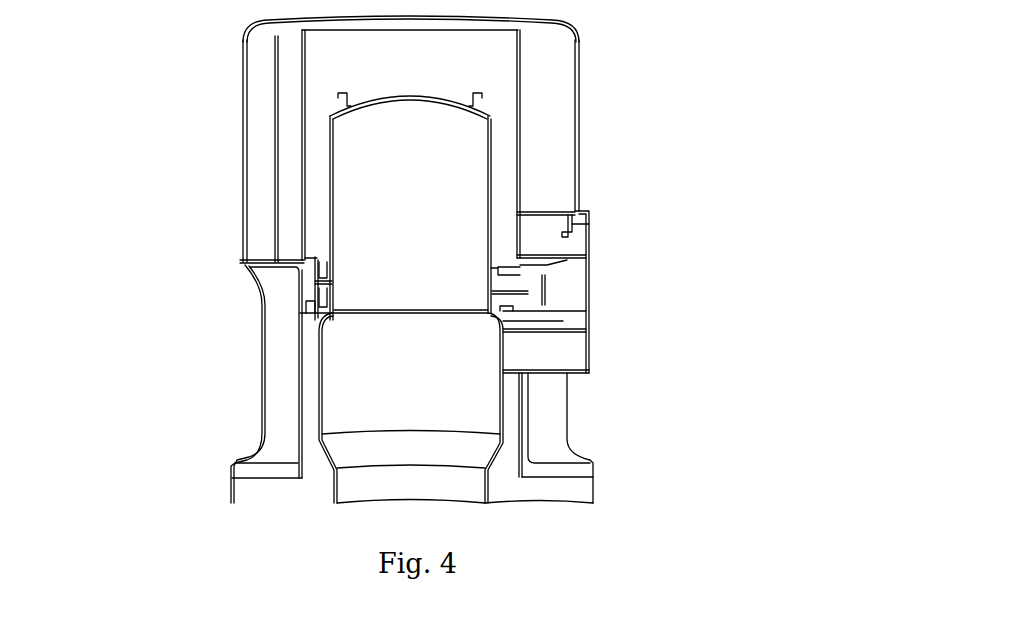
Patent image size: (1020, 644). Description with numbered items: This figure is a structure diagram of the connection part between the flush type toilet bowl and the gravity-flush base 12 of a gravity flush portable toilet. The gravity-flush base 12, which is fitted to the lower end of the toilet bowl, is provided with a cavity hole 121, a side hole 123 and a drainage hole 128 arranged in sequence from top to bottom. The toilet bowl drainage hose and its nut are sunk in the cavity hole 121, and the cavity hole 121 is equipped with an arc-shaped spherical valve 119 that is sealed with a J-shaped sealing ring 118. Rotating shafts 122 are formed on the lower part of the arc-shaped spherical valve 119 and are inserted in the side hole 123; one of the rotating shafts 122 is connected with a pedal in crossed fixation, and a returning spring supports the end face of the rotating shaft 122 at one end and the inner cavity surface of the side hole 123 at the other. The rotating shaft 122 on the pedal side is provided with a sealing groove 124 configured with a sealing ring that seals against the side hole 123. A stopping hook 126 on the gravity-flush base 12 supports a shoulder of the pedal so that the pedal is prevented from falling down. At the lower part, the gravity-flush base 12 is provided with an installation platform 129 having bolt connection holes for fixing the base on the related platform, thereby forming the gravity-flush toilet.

The gravity-flush base 12 is at (580, 142).
The cavity hole 121 is at (520, 103).
The J-shaped sealing ring 118 is at (478, 95).
The arc-shaped spherical valve 119 is at (404, 104).
The rotating shaft 122 is at (317, 285).
The side hole 123 is at (503, 309).
The sealing groove 124 is at (515, 313).
The stopping hook 126 is at (575, 223).
The drainage hole 128 is at (413, 480).
The installation platform 129 is at (558, 472).